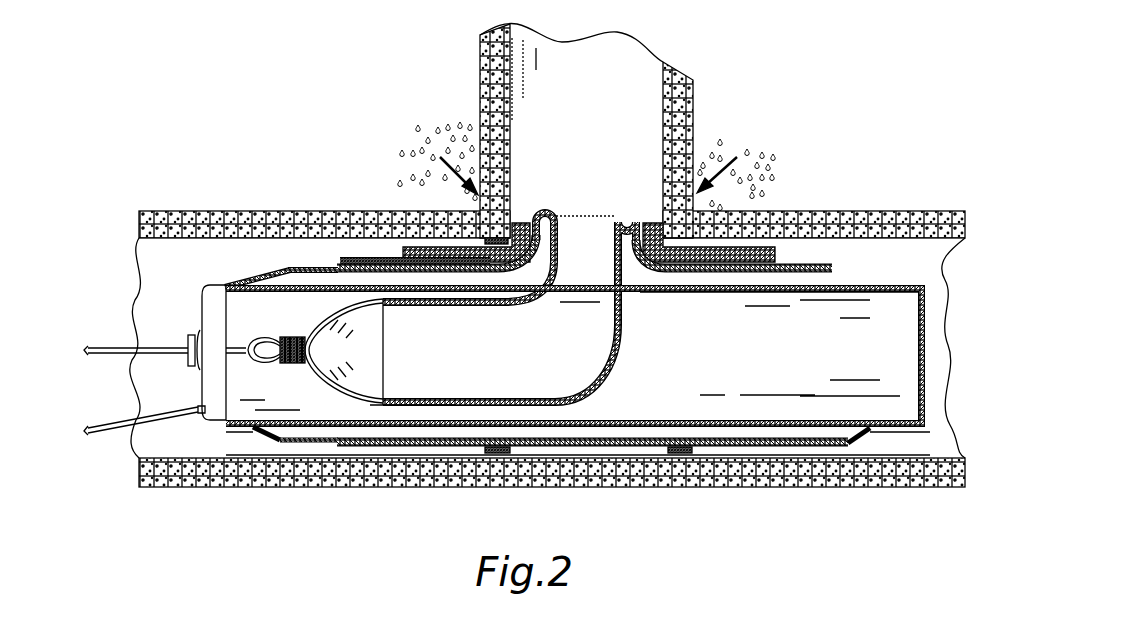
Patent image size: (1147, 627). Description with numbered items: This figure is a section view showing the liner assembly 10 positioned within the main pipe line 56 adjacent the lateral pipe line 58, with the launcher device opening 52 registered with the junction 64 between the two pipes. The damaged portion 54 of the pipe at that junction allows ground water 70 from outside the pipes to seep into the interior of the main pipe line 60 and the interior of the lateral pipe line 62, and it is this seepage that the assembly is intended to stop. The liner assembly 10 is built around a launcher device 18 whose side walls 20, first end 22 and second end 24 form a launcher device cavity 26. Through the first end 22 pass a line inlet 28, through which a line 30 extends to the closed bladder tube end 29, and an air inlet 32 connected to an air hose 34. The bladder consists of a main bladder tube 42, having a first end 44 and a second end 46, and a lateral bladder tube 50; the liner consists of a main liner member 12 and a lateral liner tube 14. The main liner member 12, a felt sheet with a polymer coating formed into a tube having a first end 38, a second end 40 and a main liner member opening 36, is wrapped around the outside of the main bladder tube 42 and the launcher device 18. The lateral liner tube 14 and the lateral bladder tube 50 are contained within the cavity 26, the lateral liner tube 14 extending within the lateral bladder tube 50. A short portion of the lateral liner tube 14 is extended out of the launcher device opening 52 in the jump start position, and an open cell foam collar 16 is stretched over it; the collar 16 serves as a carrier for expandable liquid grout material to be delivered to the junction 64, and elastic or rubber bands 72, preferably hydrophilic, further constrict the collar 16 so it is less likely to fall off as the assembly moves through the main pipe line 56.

The liner assembly 10 is at (138, 294).
The main liner member 12 is at (370, 232).
The lateral liner tube 14 is at (634, 215).
The collar 16 is at (783, 252).
The launcher device 18 is at (206, 285).
The side walls 20 is at (293, 278).
The first end 22 is at (210, 380).
The second end 24 is at (925, 345).
The launcher device cavity 26 is at (890, 377).
The line inlet 28 is at (189, 348).
The closed bladder tube end 29 is at (280, 338).
The line 30 is at (141, 352).
The air inlet 32 is at (198, 413).
The air hose 34 is at (140, 426).
The main liner member opening 36 is at (568, 214).
The first end 38 is at (330, 260).
The second end 40 is at (833, 266).
The main bladder tube 42 is at (275, 277).
The first end 44 is at (222, 286).
The second end 46 is at (942, 294).
The lateral bladder tube 50 is at (600, 366).
The launcher device opening 52 is at (660, 289).
The damaged portion 54 is at (472, 242).
The main pipe line 56 is at (910, 215).
The lateral pipe line 58 is at (694, 112).
The interior of the main pipe line 60 is at (944, 262).
The interior of the lateral pipe line 62 is at (662, 100).
The junction 64 is at (499, 205).
The ground water 70 is at (440, 157).
The bands 72 is at (492, 240).